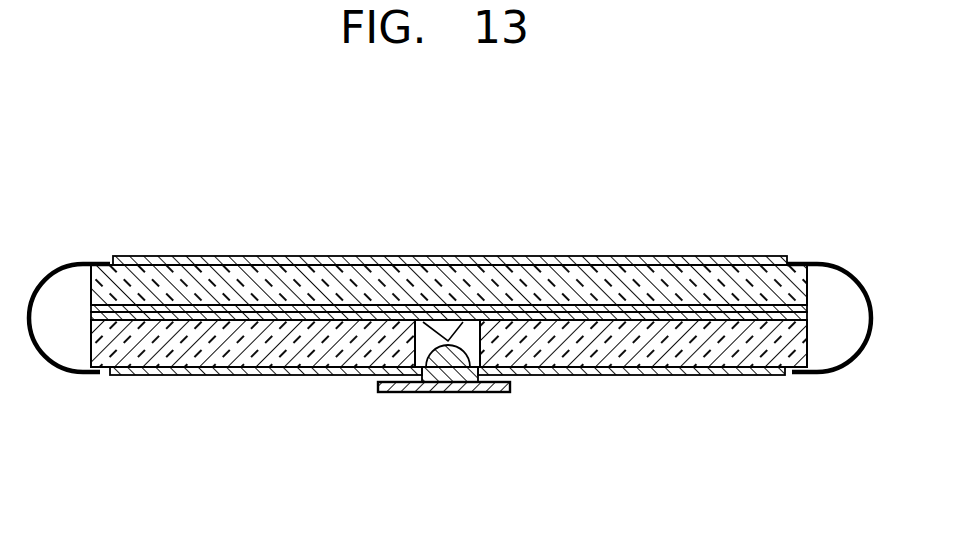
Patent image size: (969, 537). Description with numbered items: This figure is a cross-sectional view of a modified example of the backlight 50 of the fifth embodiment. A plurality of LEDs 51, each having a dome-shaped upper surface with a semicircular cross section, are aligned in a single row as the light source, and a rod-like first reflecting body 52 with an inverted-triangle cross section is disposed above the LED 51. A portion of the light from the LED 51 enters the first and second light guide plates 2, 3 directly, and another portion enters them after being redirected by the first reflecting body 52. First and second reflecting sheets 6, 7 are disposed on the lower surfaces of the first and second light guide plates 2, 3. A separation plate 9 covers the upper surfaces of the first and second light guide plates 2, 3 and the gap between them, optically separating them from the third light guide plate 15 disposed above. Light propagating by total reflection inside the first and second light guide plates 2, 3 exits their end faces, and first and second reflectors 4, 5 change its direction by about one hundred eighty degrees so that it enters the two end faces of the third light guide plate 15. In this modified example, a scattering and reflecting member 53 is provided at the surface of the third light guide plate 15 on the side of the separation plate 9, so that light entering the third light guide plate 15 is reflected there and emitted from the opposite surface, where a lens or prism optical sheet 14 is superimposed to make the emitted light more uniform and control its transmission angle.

The backlight 50 is at (852, 240).
The first reflector 4 is at (42, 357).
The second reflector 5 is at (857, 355).
The optical sheet 14 is at (282, 262).
The third light guide plate 15 is at (182, 280).
The scattering and reflecting member 53 is at (657, 313).
The separation plate 9 is at (553, 317).
The first light guide plate 2 is at (245, 345).
The second light guide plate 3 is at (717, 343).
The first reflecting body 52 is at (450, 340).
The first reflecting sheet 6 is at (178, 377).
The second reflecting sheet 7 is at (618, 368).
The LED 51 is at (448, 368).